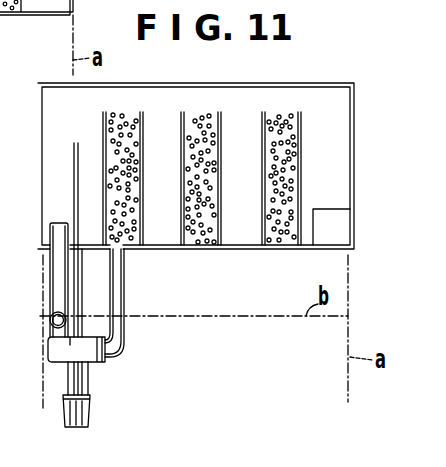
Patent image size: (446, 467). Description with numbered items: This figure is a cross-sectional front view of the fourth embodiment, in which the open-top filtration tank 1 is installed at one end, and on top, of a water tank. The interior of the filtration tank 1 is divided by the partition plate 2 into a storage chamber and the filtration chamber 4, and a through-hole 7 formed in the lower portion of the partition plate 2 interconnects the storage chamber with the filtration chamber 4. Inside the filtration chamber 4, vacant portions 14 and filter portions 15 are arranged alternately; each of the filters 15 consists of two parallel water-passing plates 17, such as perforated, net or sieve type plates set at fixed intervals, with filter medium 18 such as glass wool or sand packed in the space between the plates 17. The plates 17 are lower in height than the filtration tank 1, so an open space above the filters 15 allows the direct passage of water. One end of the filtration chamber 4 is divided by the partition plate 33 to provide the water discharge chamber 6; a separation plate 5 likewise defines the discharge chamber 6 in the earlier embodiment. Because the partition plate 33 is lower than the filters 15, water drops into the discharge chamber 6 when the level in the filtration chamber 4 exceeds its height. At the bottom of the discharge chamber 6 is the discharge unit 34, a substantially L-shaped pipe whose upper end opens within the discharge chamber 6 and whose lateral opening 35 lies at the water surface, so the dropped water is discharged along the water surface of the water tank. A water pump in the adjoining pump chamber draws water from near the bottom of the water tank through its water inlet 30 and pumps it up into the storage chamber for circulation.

The filtration tank 1 is at (203, 146).
The partition plate 2 is at (314, 100).
The filtration chamber 4 is at (340, 157).
The separation plate 5 is at (3, 39).
The water discharge chamber 6 is at (50, 168).
The through-hole 7 is at (338, 231).
The vacant portions 14 is at (158, 247).
The filter portions 15 is at (128, 230).
The water-passing plates 17 is at (182, 170).
The filter medium 18 is at (128, 130).
The water inlet 30 is at (86, 404).
The partition plate 33 is at (76, 157).
The discharge unit 34 is at (55, 275).
The lateral opening 35 is at (50, 320).